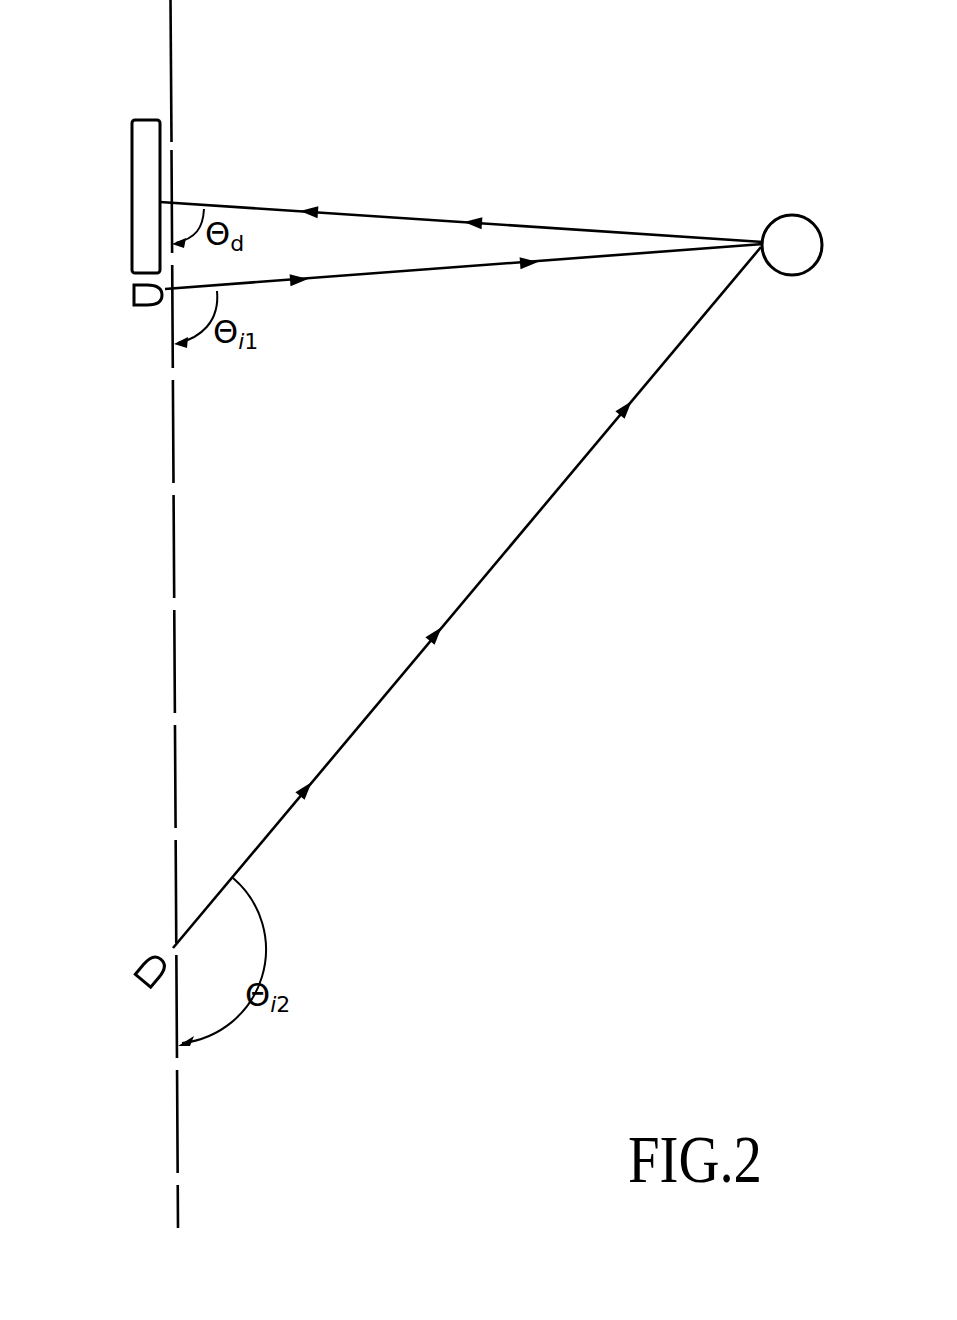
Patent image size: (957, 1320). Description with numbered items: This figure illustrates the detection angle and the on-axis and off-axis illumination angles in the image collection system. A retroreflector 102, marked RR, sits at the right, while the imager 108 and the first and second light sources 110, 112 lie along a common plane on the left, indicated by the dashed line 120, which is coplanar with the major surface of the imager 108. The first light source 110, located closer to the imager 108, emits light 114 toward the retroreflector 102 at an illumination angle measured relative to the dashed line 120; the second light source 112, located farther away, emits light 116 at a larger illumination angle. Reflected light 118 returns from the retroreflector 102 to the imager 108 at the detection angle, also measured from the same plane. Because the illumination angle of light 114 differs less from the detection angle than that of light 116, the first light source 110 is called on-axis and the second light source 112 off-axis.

The retroreflector 102 is at (790, 215).
The imager 108 is at (138, 119).
The first light source 110 is at (133, 297).
The second light source 112 is at (140, 960).
The light 114 is at (357, 276).
The light 116 is at (492, 570).
The reflected light 118 is at (415, 213).
The dashed line 120 is at (173, 30).